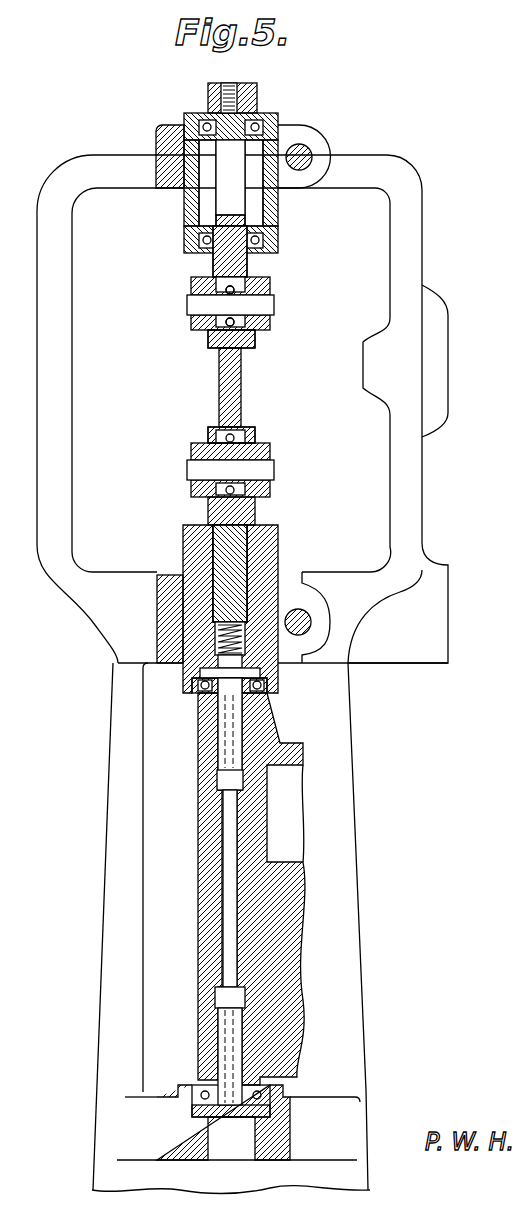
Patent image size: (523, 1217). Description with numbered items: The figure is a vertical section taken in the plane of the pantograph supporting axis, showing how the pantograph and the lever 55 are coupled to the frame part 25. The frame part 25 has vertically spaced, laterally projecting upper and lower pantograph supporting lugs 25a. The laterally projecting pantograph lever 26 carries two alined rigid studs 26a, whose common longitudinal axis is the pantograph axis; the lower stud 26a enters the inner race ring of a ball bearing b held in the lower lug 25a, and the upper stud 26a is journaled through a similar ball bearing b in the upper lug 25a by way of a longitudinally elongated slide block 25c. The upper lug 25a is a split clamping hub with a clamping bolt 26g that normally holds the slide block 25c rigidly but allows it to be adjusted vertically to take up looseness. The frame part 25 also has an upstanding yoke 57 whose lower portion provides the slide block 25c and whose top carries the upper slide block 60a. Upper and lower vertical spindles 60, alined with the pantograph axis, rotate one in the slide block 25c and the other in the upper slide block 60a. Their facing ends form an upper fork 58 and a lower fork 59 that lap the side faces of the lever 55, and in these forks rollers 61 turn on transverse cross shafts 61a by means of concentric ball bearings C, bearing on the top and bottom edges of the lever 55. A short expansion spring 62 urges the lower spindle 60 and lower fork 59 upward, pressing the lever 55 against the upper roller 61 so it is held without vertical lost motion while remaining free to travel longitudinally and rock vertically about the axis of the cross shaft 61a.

The frame part 25 is at (108, 1058).
The pantograph supporting lug 25a is at (80, 1153).
The slide block 25c is at (270, 548).
The pantograph lever 26 is at (300, 982).
The stud 26a is at (222, 1067).
The clamping bolt 26g is at (312, 612).
The lever 55 is at (240, 378).
The yoke 57 is at (65, 355).
The upper fork 58 is at (255, 337).
The lower fork 59 is at (245, 438).
The spindle 60 is at (220, 188).
The upper slide block 60a is at (278, 217).
The roller 61 is at (215, 340).
The cross shaft 61a is at (275, 305).
The expansion spring 62 is at (232, 637).
The ball bearing b is at (270, 687).
The ball bearing C is at (215, 272).